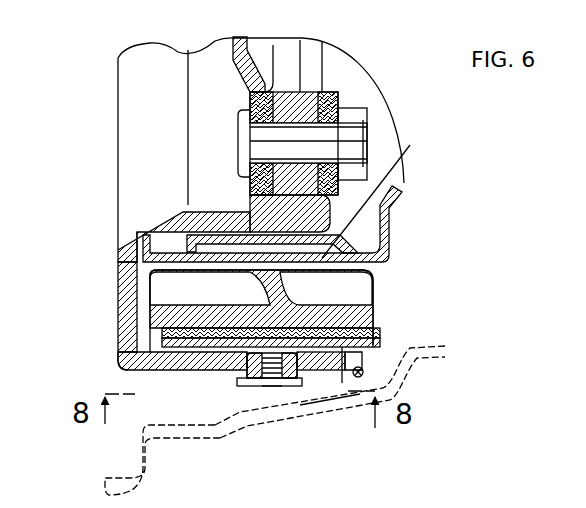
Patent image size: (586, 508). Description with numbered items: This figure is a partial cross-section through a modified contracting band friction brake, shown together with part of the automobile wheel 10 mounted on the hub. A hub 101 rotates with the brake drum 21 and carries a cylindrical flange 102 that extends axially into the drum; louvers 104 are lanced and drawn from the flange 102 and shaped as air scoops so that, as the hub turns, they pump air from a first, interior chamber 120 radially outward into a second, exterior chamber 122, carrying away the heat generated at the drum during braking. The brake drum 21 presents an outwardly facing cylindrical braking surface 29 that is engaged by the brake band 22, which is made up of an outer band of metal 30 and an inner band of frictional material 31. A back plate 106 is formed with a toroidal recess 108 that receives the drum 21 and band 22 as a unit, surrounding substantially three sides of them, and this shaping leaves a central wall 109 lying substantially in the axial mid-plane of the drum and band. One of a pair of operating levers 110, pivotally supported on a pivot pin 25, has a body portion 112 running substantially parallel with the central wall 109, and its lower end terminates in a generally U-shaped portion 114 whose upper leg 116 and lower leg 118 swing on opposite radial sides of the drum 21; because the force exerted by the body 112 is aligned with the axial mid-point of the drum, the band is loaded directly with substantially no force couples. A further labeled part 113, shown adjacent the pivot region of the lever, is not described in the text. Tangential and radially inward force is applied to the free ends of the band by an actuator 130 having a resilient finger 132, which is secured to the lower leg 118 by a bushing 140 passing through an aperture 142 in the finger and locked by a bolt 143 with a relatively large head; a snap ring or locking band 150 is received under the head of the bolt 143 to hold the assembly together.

The automobile wheel 10 is at (299, 426).
The brake drum 21 is at (381, 289).
The brake band 22 is at (378, 342).
The pivot pin 25 is at (372, 130).
The cylindrical braking surface 29 is at (371, 344).
The outer band of metal 30 is at (135, 351).
The inner band of frictional material 31 is at (160, 333).
The hub 101 is at (403, 204).
The cylindrical flange 102 is at (401, 184).
The louvers 104 is at (342, 241).
The back plate 106 is at (237, 34).
The toroidal recess 108 is at (118, 167).
The central wall 109 is at (262, 80).
The operating lever 110 is at (314, 36).
The body portion 112 is at (313, 72).
The bearing 113 is at (247, 202).
The U-shaped portion 114 is at (118, 262).
The upper leg 116 is at (204, 207).
The lower leg 118 is at (163, 372).
The first chamber 120 is at (382, 192).
The second chamber 122 is at (145, 301).
The actuator 130 is at (321, 399).
The resilient finger 132 is at (343, 385).
The bushing 140 is at (299, 360).
The aperture 142 is at (243, 388).
The bolt 143 is at (270, 388).
The snap ring or locking band 150 is at (365, 373).